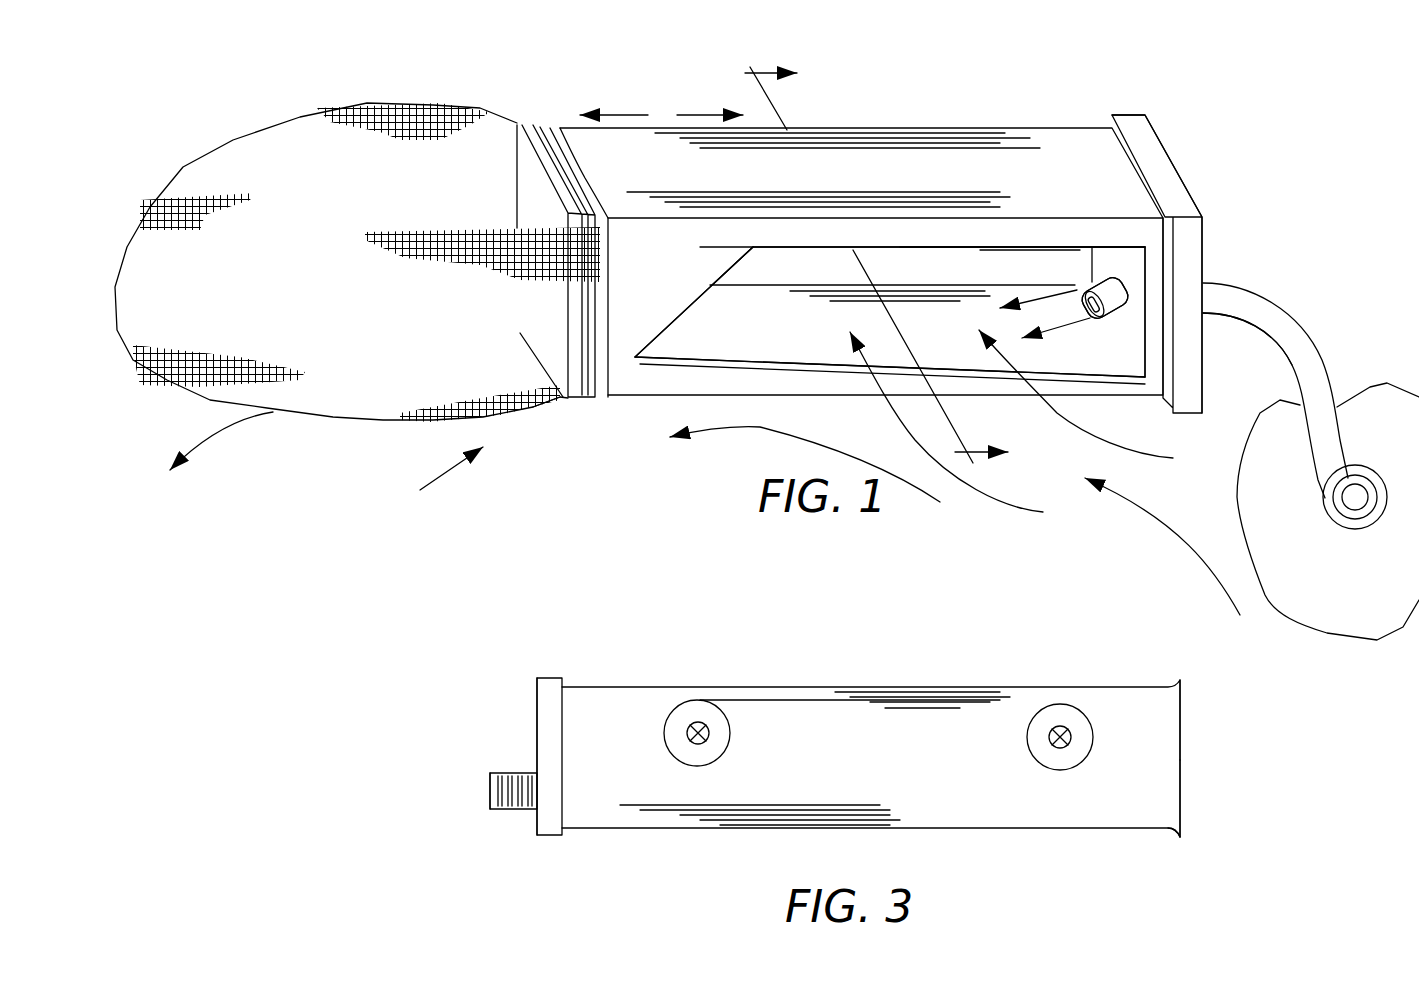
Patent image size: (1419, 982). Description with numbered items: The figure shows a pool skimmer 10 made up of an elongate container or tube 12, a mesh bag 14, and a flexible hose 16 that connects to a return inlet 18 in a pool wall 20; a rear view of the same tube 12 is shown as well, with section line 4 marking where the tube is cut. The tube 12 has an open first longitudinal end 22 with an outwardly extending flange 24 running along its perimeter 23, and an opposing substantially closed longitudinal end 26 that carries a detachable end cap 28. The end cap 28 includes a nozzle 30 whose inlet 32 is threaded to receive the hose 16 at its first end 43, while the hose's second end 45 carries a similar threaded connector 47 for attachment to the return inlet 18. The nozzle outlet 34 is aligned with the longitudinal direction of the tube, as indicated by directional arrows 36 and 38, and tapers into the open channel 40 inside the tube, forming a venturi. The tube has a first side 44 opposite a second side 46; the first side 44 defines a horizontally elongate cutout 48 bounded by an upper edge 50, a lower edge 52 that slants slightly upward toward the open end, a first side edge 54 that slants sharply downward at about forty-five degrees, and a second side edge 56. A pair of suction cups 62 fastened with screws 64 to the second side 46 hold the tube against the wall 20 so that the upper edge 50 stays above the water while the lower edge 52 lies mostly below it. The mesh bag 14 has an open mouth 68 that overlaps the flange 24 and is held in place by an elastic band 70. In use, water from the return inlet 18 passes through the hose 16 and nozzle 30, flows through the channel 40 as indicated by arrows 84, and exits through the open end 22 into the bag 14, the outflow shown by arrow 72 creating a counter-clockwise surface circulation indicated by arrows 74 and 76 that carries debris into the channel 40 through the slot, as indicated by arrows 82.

In FIG. 1, the pool skimmer 10 is at (435, 480).
In FIG. 1, the tube 12 is at (928, 123).
In FIG. 3, the tube 12 is at (755, 685).
In FIG. 1, the mesh bag 14 is at (190, 193).
In FIG. 1, the hose 16 is at (1318, 373).
In FIG. 1, the return inlet 18 is at (1345, 528).
In FIG. 1, the pool wall 20 is at (1370, 584).
In FIG. 1, the open first longitudinal end 22 is at (530, 330).
In FIG. 3, the open first longitudinal end 22 is at (1183, 743).
In FIG. 1, the perimeter 23 is at (515, 187).
In FIG. 3, the perimeter 23 is at (1183, 797).
In FIG. 1, the flange 24 is at (565, 397).
In FIG. 3, the flange 24 is at (1175, 830).
In FIG. 1, the closed longitudinal end 26 is at (1190, 177).
In FIG. 3, the closed longitudinal end 26 is at (530, 707).
In FIG. 1, the end cap 28 is at (1133, 115).
In FIG. 3, the end cap 28 is at (547, 685).
In FIG. 1, the nozzle 30 is at (1132, 280).
In FIG. 3, the nozzle 30 is at (507, 822).
In FIG. 3, the inlet 32 is at (490, 783).
In FIG. 1, the outlet 34 is at (1103, 287).
In FIG. 1, the directional arrow 36 is at (632, 113).
In FIG. 1, the directional arrow 38 is at (703, 113).
In FIG. 1, the section line 4- 4 is at (888, 263).
In FIG. 1, the channel 40 is at (695, 326).
In FIG. 1, the first end 43 is at (1227, 307).
In FIG. 1, the first side 44 is at (770, 236).
In FIG. 1, the second end 45 is at (1340, 480).
In FIG. 1, the second side 46 is at (815, 277).
In FIG. 3, the second side 46 is at (870, 771).
In FIG. 1, the threaded connector 47 is at (1337, 522).
In FIG. 1, the cutout 48 is at (1007, 265).
In FIG. 1, the upper edge 50 is at (935, 247).
In FIG. 1, the lower edge 52 is at (735, 357).
In FIG. 1, the first side edge 54 is at (707, 283).
In FIG. 1, the second side edge 56 is at (1150, 330).
In FIG. 3, the suction cups 62 is at (693, 708).
In FIG. 3, the screws 64 is at (710, 733).
In FIG. 1, the open mouth 68 is at (585, 178).
In FIG. 1, the elastic band 70 is at (524, 125).
In FIG. 1, the arrow 72 is at (225, 433).
In FIG. 1, the arrow 74 is at (720, 433).
In FIG. 1, the arrow 76 is at (1177, 527).
In FIG. 1, the arrows 82 is at (1080, 432).
In FIG. 1, the arrows 84 is at (1053, 303).